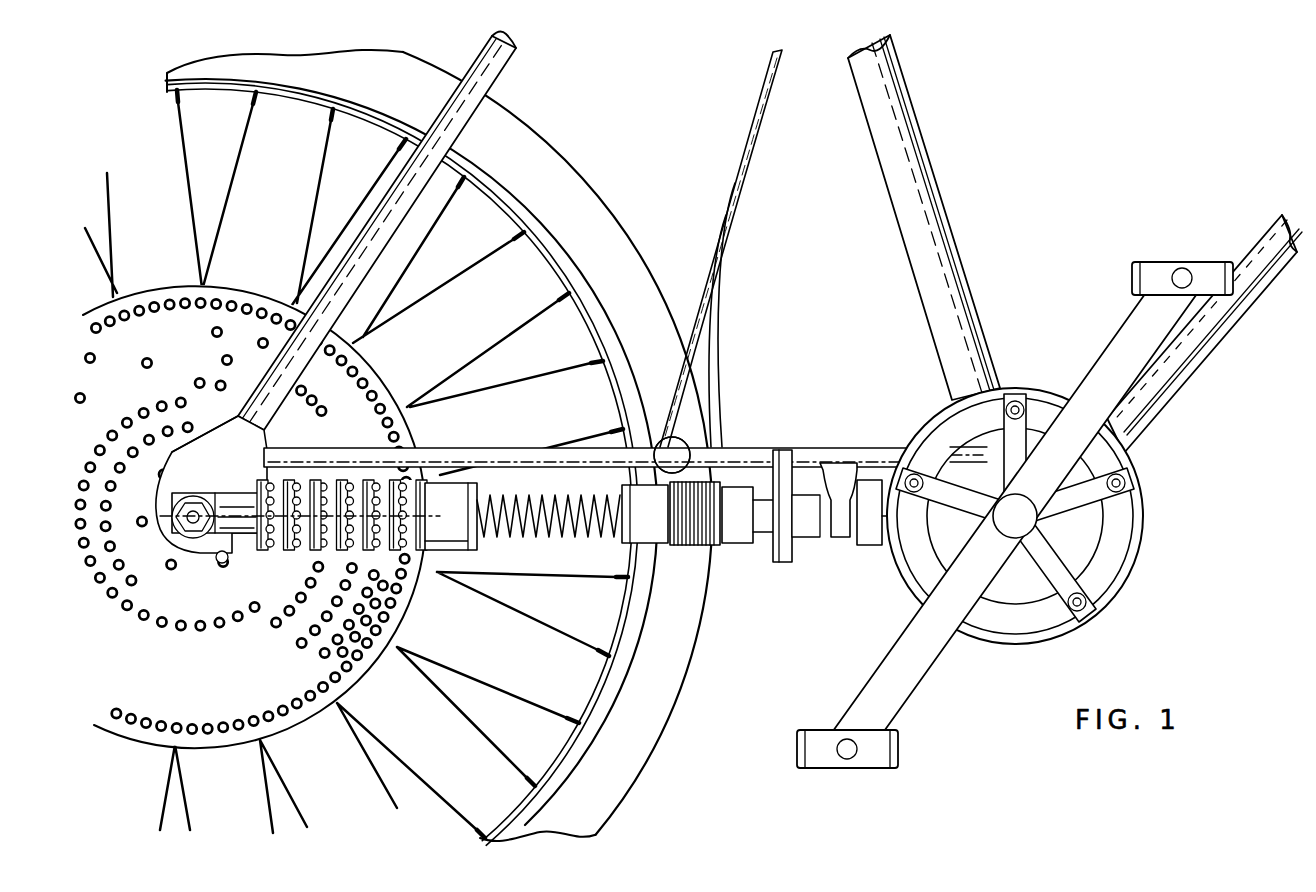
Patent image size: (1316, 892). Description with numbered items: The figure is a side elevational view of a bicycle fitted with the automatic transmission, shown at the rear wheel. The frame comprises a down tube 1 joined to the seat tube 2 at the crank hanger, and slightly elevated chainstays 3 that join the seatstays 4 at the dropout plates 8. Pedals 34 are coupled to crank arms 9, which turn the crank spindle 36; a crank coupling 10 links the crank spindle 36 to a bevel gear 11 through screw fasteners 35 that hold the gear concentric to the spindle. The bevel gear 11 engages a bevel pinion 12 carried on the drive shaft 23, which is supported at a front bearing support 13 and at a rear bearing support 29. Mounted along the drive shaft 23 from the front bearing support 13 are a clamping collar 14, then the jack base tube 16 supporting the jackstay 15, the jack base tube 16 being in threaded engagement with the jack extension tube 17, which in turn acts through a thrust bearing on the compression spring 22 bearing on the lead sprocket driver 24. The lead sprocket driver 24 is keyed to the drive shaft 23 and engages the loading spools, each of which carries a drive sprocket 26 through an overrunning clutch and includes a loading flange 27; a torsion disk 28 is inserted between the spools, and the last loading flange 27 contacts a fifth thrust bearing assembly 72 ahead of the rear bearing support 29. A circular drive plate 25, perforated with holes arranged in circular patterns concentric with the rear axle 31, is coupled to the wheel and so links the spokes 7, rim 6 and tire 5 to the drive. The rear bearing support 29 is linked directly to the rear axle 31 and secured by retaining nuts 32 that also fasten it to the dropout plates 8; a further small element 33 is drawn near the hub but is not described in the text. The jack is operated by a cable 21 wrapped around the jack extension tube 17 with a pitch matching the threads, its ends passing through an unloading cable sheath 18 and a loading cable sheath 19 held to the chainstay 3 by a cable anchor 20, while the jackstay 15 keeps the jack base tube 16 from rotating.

The down tube 1 is at (1270, 240).
The seat tube 2 is at (958, 285).
The chainstays 3 is at (750, 450).
The seatstays 4 is at (512, 60).
The tire 5 is at (544, 156).
The rim 6 is at (563, 262).
The spokes 7 is at (448, 287).
The dropout plates 8 is at (220, 471).
The crank arms 9 is at (1114, 357).
The crank coupling 10 is at (965, 503).
The bevel gear 11 is at (933, 432).
The bevel pinion 12 is at (868, 528).
The front bearing support 13 is at (840, 472).
The clamping collar 14 is at (817, 517).
The jackstay 15 is at (786, 452).
The jack base tube 16 is at (745, 546).
The jack extension tube 17 is at (710, 548).
The unloading cable sheath 18 is at (719, 256).
The loading cable sheath 19 is at (696, 273).
The cable anchor 20 is at (652, 438).
The cable 21 is at (678, 398).
The compression spring 22 is at (517, 537).
The drive shaft 23 is at (567, 527).
The lead sprocket driver 24 is at (442, 556).
The drive plate 25 is at (190, 700).
The drive sprocket 26 is at (412, 455).
The loading flange 27 is at (349, 482).
The torsion disk 28 is at (316, 480).
The rear bearing support 29 is at (227, 498).
The rear axle 31 is at (166, 499).
The retaining nuts 32 is at (165, 536).
The pin 33 is at (217, 561).
The pedals 34 is at (1160, 264).
The screw fasteners 35 is at (1013, 398).
The crank spindle 36 is at (1026, 522).
The fifth thrust bearing assembly 72 is at (257, 468).